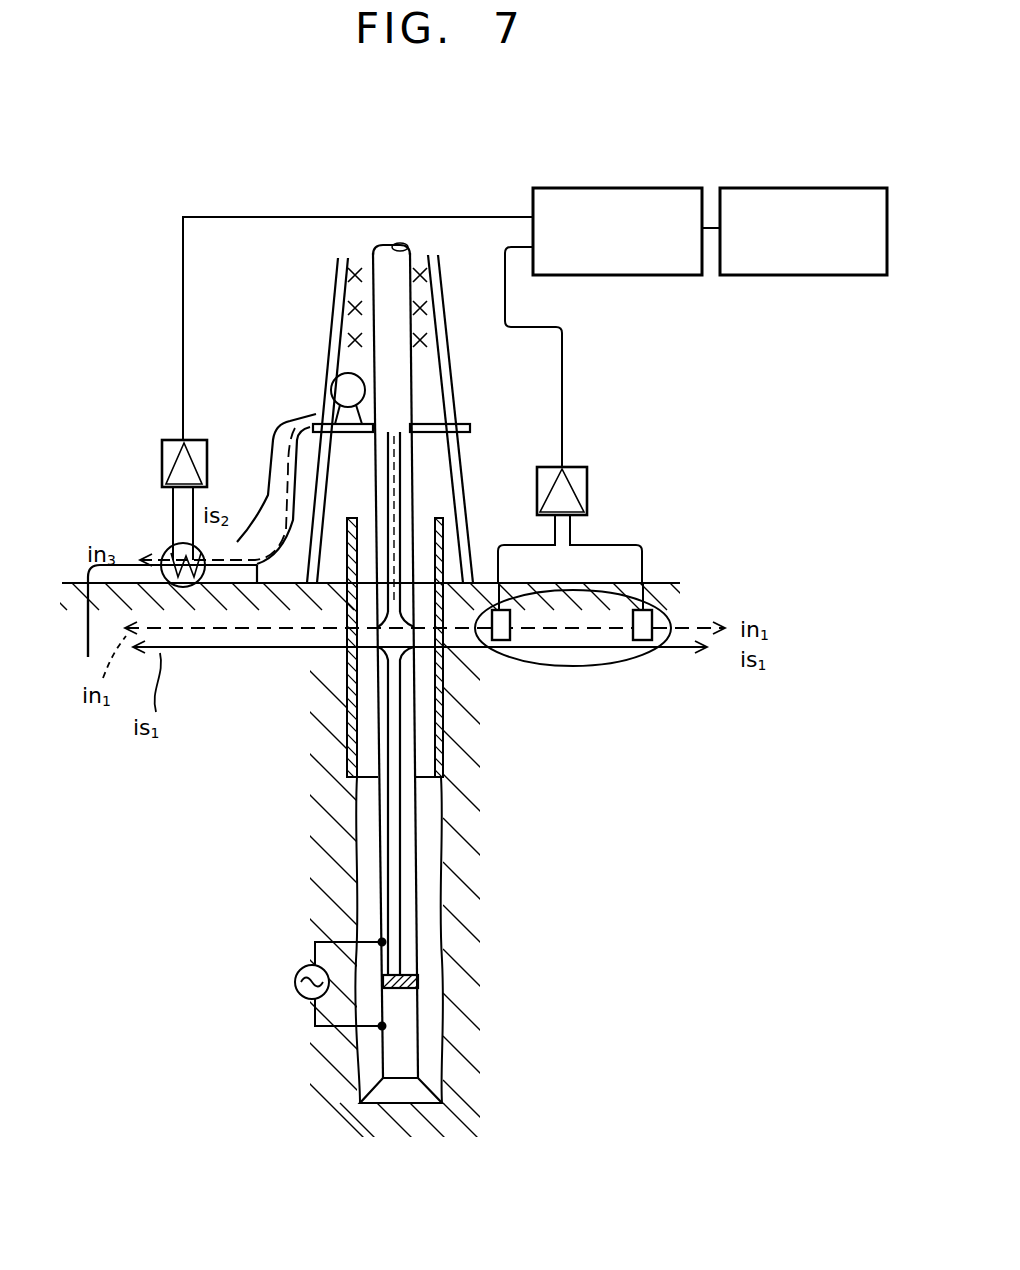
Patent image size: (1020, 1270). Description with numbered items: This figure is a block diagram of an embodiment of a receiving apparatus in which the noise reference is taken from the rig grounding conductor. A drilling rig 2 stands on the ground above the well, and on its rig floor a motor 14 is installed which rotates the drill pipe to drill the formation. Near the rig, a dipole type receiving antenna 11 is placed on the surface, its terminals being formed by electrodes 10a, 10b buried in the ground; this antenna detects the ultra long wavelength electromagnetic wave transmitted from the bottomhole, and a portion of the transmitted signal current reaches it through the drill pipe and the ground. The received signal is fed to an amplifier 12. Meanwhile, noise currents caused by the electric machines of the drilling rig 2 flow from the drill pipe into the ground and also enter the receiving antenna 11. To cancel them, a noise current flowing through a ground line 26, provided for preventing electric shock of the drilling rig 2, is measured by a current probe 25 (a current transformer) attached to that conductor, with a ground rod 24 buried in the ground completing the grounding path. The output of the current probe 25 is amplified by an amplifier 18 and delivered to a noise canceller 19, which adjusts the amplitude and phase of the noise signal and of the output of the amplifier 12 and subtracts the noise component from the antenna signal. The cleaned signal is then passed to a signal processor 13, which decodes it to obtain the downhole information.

The drilling rig 2 is at (470, 425).
The electrode 10a is at (647, 641).
The electrode 10b is at (503, 641).
The receiving antenna 11 is at (672, 615).
The amplifier 12 is at (588, 493).
The signal processor 13 is at (794, 188).
The motor 14 is at (337, 388).
The amplifier 18 is at (168, 440).
The noise canceller 19 is at (658, 188).
The ground rod 24 is at (86, 620).
The current probe 25 is at (167, 585).
The ground line 26 is at (257, 585).